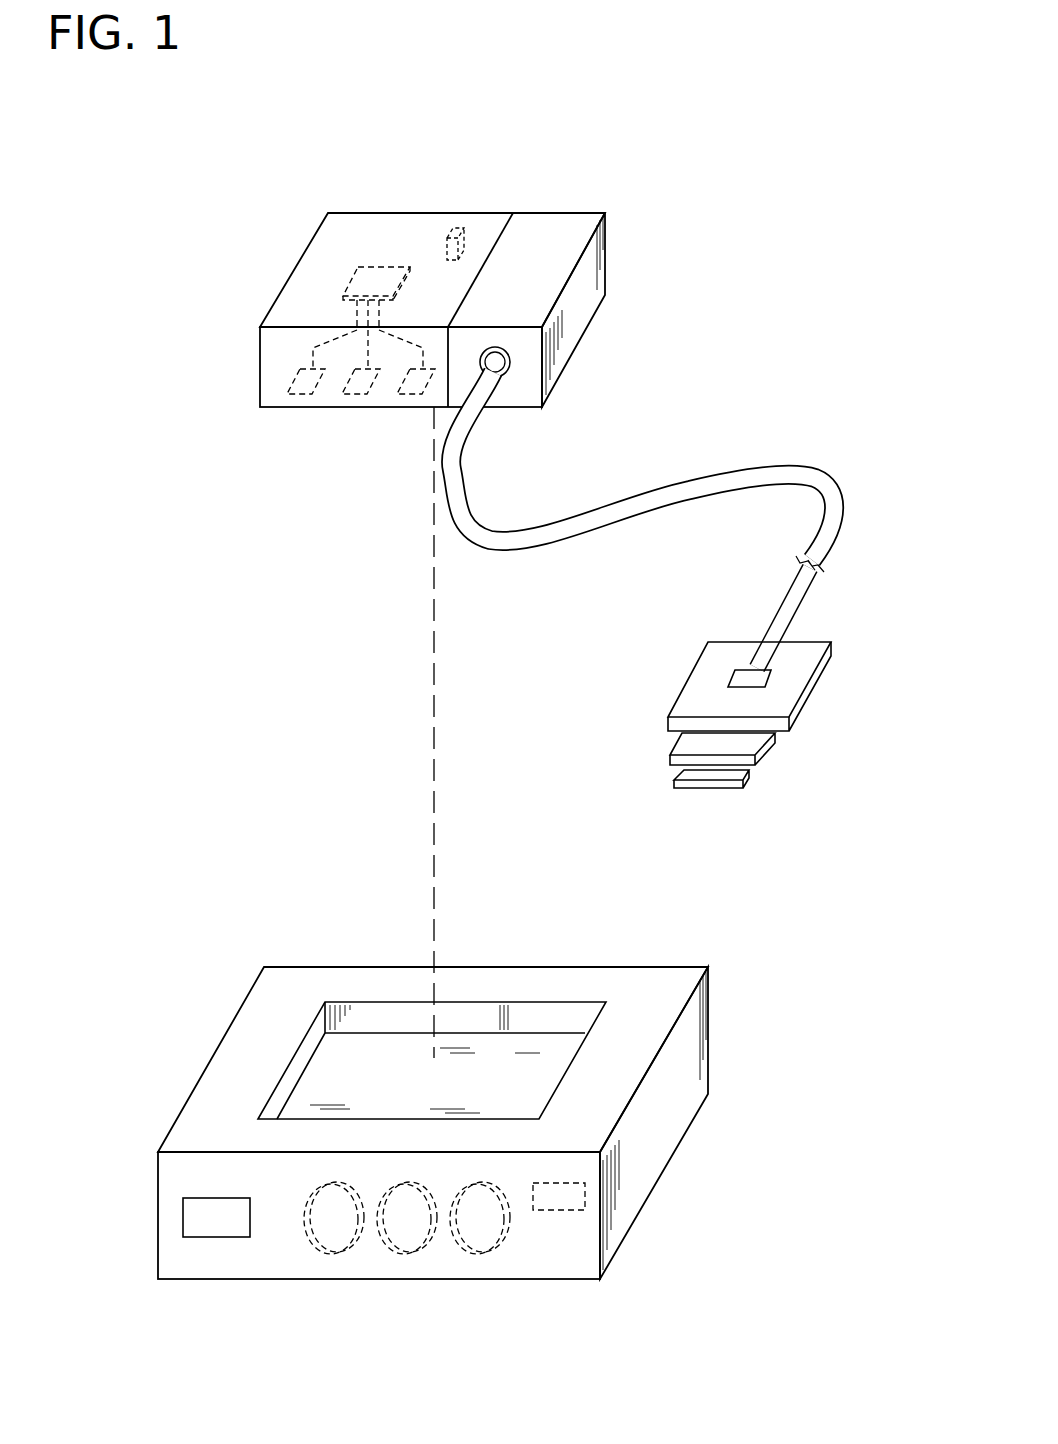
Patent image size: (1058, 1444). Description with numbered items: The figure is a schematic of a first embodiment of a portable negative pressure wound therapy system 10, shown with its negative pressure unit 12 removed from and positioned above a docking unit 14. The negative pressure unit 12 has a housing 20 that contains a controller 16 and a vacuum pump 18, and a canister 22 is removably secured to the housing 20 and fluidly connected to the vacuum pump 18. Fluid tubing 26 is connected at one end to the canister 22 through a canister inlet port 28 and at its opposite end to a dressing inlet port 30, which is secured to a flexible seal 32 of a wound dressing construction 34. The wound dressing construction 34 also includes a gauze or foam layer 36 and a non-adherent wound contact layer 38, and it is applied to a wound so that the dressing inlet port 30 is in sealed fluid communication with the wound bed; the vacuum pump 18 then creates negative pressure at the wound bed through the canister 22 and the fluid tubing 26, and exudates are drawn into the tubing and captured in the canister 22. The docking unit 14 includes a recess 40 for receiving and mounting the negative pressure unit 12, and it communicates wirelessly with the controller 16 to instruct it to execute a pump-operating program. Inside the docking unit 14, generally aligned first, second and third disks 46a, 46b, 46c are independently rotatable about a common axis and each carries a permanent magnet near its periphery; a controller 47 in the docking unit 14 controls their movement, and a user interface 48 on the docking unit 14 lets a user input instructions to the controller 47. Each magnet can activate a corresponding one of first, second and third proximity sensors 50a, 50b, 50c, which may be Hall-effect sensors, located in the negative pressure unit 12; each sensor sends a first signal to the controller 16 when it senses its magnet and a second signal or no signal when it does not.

The negative pressure wound therapy system 10 is at (858, 94).
The negative pressure unit 12 is at (590, 180).
The docking unit 14 is at (176, 1053).
The controller 16 is at (380, 270).
The vacuum pump 18 is at (455, 232).
The housing 20 is at (293, 268).
The canister 22 is at (600, 273).
The fluid tubing 26 is at (793, 467).
The canister inlet port 28 is at (512, 366).
The dressing inlet port 30 is at (735, 680).
The flexible seal 32 is at (812, 707).
The wound dressing construction 34 is at (840, 755).
The gauze or foam layer 36 is at (672, 762).
The non-adherent wound contact layer 38 is at (725, 782).
The recess 40 is at (362, 1065).
The first disk 46a is at (327, 1257).
The second disk 46b is at (402, 1257).
The third disk 46c is at (475, 1257).
The controller 47 is at (560, 1213).
The user interface 48 is at (195, 1221).
The first proximity sensor 50a is at (300, 394).
The second proximity sensor 50b is at (357, 396).
The third proximity sensor 50c is at (412, 396).